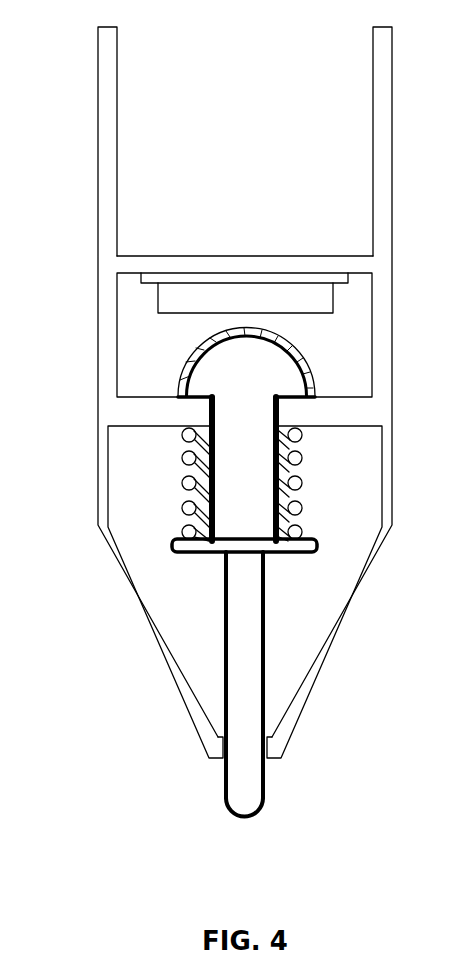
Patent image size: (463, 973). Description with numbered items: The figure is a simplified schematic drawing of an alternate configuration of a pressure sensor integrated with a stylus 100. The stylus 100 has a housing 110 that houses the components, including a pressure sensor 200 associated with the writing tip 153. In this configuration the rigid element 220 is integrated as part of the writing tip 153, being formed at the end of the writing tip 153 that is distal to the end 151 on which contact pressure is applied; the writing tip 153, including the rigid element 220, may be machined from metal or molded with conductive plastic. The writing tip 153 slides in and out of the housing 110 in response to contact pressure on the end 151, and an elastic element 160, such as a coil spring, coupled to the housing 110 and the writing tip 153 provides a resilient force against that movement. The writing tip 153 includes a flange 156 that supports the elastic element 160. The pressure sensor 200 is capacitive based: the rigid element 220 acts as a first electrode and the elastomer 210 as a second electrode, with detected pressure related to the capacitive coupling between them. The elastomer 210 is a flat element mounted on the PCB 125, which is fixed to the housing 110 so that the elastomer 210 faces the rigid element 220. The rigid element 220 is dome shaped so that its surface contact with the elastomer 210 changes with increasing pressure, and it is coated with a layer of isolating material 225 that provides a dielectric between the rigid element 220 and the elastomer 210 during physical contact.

The stylus 100 is at (73, 74).
The housing 110 is at (183, 684).
The PCB assembly 125 is at (347, 276).
The end 151 is at (229, 824).
The writing tip 153 is at (226, 768).
The flange 156 is at (176, 553).
The elastic element 160 is at (182, 460).
The pressure sensor 200 is at (170, 338).
The elastomer 210 is at (175, 313).
The rigid element 220 is at (272, 382).
The layer of isolating material 225 is at (303, 352).